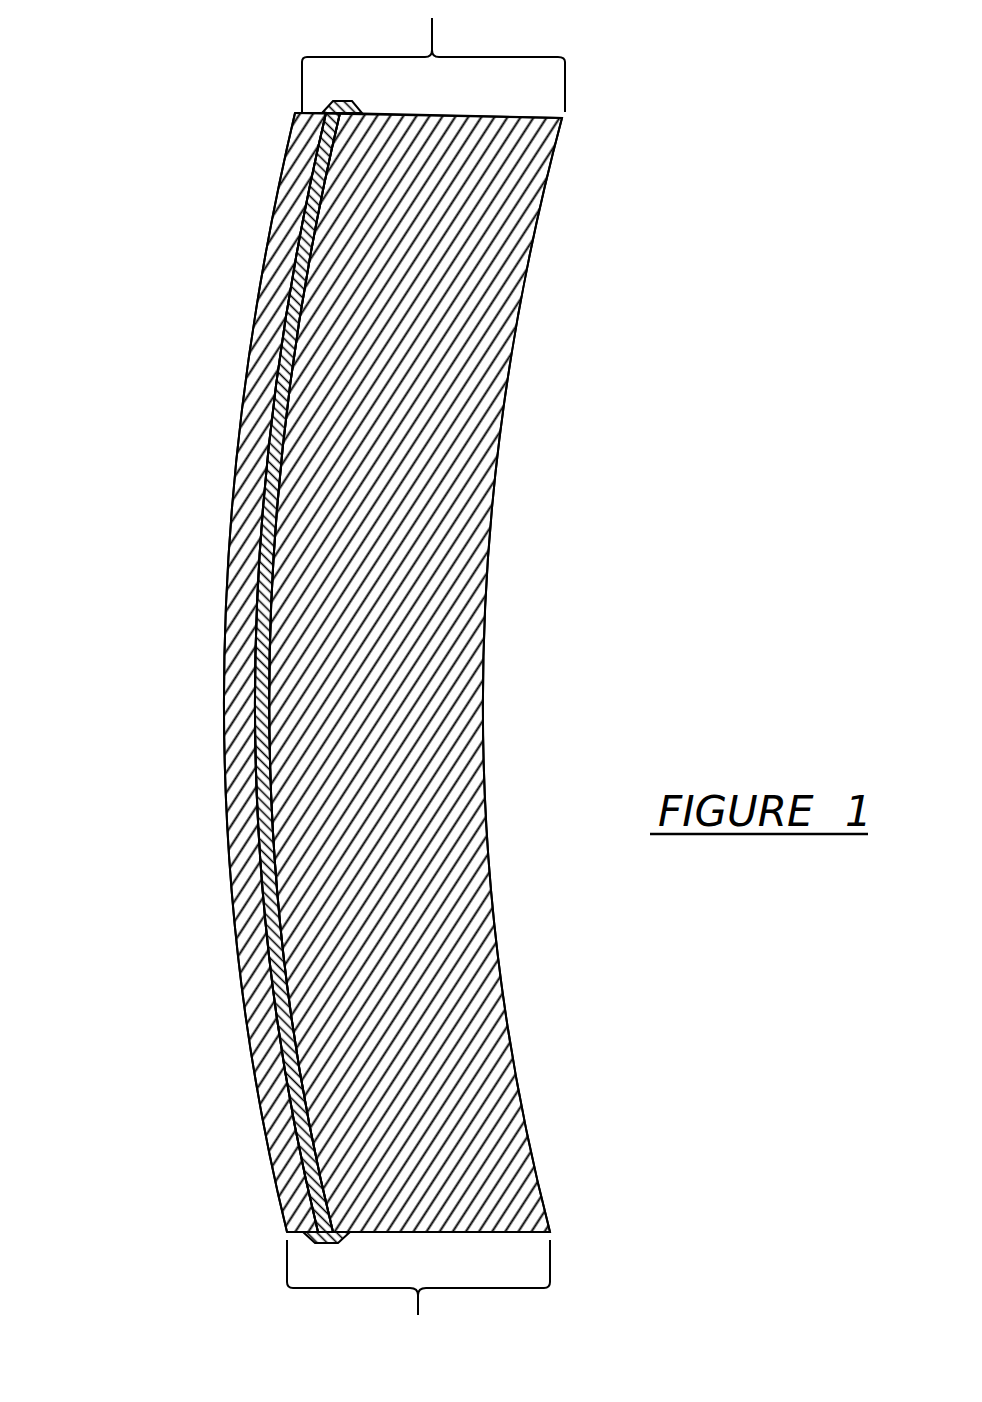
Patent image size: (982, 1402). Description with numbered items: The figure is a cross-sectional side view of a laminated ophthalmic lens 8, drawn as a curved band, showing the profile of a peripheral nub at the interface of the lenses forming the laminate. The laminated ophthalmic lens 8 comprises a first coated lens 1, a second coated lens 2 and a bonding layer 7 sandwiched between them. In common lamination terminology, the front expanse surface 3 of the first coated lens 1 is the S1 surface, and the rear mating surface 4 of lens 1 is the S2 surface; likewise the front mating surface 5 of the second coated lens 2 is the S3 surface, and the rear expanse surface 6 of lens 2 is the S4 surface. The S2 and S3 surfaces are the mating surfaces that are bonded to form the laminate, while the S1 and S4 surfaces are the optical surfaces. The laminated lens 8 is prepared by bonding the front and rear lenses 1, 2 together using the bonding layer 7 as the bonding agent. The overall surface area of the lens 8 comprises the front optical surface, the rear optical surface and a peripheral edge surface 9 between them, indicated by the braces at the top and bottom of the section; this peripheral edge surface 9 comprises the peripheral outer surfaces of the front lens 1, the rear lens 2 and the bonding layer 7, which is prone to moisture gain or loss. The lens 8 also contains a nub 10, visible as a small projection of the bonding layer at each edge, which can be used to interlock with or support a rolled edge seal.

The first coated lens 1 is at (247, 478).
The second coated lens 2 is at (400, 745).
The front expanse surface 3 is at (226, 590).
The rear mating surface 4 is at (259, 806).
The front mating surface 5 is at (273, 567).
The rear expanse surface 6 is at (513, 349).
The bonding layer 7 is at (280, 419).
The laminated ophthalmic lens 8 is at (205, 1035).
The peripheral edge surface 9 is at (426, 679).
The nub 10 is at (362, 110).